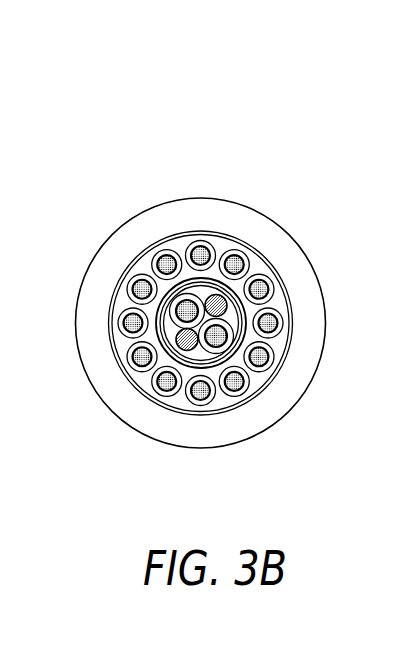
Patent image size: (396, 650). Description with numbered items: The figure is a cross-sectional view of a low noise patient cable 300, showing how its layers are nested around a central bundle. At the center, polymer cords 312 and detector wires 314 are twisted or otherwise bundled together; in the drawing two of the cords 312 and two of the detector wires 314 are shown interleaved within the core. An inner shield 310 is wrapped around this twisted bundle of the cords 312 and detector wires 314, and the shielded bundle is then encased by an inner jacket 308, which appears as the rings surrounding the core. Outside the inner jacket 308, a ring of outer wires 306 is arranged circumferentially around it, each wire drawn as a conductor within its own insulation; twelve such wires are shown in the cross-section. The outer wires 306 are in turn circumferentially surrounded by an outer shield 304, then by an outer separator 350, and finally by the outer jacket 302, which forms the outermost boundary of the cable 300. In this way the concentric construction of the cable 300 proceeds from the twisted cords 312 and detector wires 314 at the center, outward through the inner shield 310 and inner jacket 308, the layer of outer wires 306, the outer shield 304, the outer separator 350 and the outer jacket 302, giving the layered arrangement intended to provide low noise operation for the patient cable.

The low noise patient cable 300 is at (282, 102).
The outer jacket 302 is at (191, 440).
The outer shield 304 is at (121, 359).
The outer wires 306 is at (127, 322).
The inner jacket 308 is at (248, 333).
The inner shield 310 is at (245, 311).
The polymer cords 312 is at (218, 296).
The detector wires 314 is at (190, 293).
The outer separator 350 is at (138, 396).